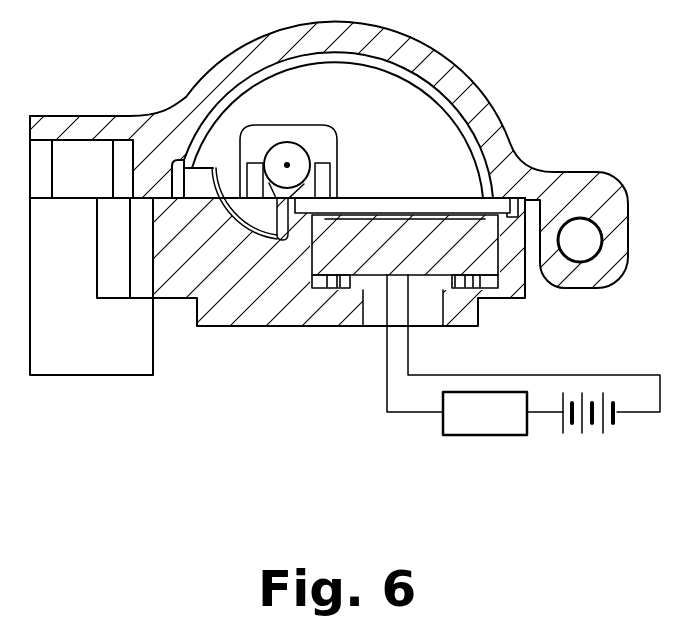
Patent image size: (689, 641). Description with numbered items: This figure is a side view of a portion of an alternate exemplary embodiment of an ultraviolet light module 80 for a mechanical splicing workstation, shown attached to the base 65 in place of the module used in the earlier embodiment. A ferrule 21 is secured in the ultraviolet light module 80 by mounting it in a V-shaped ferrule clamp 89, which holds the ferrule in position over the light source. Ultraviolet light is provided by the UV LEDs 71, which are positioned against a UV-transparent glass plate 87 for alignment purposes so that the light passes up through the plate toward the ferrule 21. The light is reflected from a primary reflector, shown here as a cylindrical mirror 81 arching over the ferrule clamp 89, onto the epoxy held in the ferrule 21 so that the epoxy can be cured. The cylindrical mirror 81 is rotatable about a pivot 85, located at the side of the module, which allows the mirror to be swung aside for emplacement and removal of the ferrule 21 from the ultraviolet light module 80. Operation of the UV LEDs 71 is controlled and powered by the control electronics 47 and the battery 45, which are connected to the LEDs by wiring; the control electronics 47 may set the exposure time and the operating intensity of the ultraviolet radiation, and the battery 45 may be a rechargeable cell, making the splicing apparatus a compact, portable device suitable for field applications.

The ferrule 21 is at (271, 149).
The battery 45 is at (595, 438).
The control electronics 47 is at (503, 436).
The base 65 is at (90, 377).
The UV LEDs 71 is at (374, 278).
The ultraviolet light module 80 is at (246, 421).
The cylindrical mirror 81 is at (435, 53).
The pivot 85 is at (603, 250).
The UV-transparent glass plate 87 is at (364, 197).
The V-shaped ferrule clamp 89 is at (320, 167).